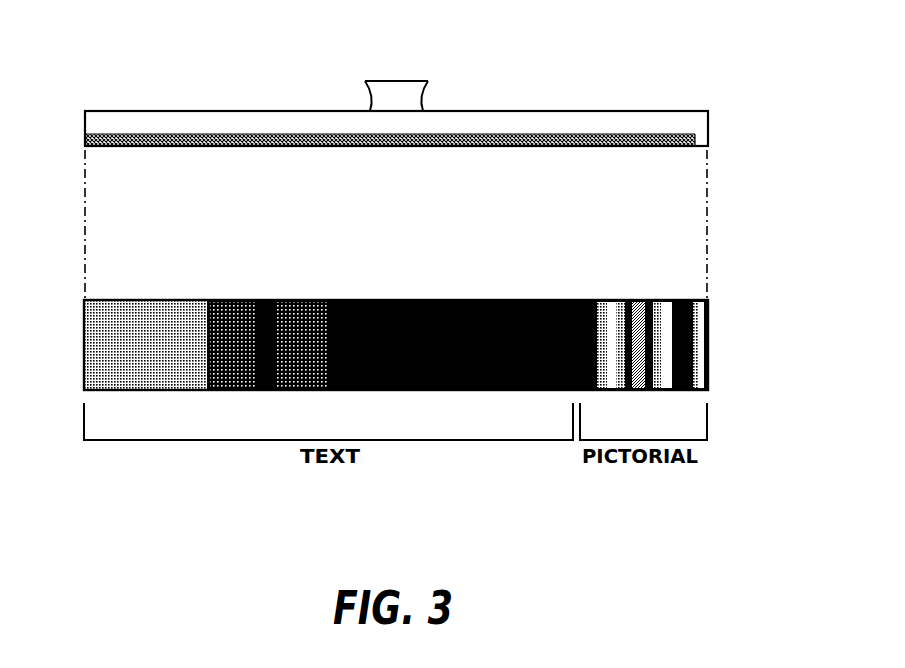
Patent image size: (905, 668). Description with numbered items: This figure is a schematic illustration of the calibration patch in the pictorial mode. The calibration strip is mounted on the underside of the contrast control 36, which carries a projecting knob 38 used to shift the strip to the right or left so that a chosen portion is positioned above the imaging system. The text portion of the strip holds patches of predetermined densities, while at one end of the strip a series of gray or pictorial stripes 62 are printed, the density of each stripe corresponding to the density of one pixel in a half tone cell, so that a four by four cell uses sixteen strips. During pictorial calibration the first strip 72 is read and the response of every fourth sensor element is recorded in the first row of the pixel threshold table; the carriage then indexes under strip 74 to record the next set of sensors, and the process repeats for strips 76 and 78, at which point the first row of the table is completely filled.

The contrast control 36 is at (85, 128).
The projecting knob 38 is at (411, 97).
The gray or pictorial stripes 62 is at (620, 300).
The first strip 72 is at (699, 300).
The strip 74 is at (692, 300).
The strip 76 is at (685, 300).
The strip 78 is at (668, 300).